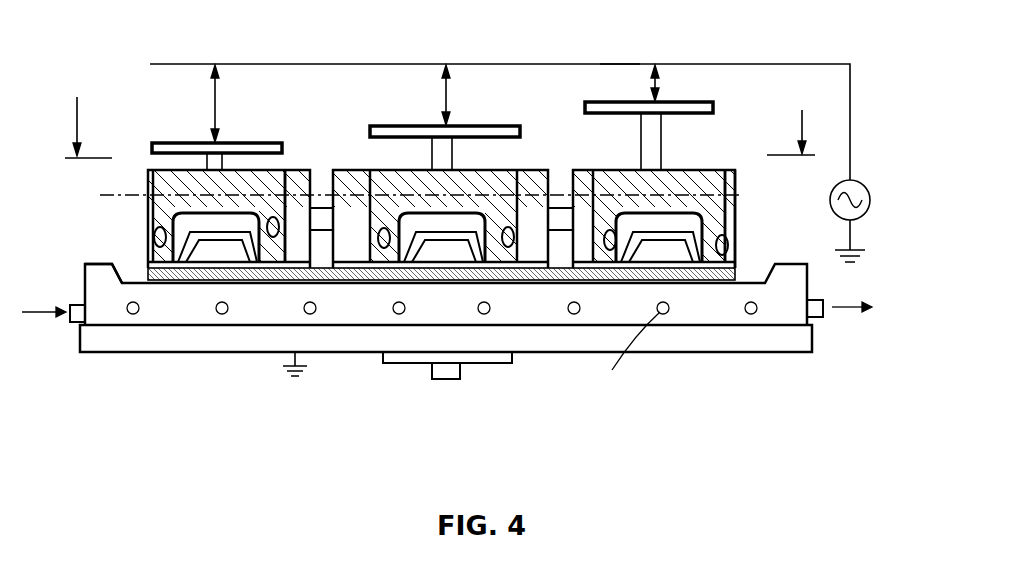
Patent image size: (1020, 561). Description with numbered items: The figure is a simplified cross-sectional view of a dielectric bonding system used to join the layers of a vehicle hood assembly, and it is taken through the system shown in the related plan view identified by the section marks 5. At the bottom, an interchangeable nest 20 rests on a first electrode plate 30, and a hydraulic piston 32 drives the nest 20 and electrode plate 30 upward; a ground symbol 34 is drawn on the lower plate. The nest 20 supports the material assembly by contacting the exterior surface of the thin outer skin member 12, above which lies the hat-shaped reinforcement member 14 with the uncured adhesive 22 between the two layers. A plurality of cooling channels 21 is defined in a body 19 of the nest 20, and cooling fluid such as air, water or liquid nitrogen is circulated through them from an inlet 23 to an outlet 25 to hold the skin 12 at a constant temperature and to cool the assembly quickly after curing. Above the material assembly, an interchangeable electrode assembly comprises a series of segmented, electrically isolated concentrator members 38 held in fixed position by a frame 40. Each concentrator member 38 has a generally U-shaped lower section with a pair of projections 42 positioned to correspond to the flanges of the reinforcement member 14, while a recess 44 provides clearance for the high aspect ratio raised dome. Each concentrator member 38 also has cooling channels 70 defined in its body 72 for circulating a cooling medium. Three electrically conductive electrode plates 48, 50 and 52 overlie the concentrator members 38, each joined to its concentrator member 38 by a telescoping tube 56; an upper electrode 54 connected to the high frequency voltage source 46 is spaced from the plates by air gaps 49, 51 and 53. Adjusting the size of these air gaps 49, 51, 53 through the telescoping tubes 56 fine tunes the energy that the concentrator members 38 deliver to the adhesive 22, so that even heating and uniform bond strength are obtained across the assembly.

The section line of FIG. 5 is at (440, 111).
The outer skin member 12 is at (747, 313).
The reinforcement member 14 is at (740, 228).
The body 19 is at (505, 332).
The interchangeable nest 20 is at (82, 298).
The cooling channel 21 is at (578, 312).
The adhesive 22 is at (738, 278).
The inlet 23 is at (72, 323).
The outlet 25 is at (823, 319).
The first electrode plate 30 is at (100, 340).
The hydraulic piston 32 is at (461, 368).
The ground 34 is at (287, 368).
The concentrator member 38 is at (158, 223).
The frame 40 is at (733, 170).
The projection 42 is at (181, 284).
The recess 44 is at (284, 174).
The high frequency voltage source 46 is at (856, 182).
The electrode plate 48 is at (172, 142).
The air gap 49 is at (218, 100).
The electrode plate 50 is at (398, 122).
The air gap 51 is at (449, 93).
The electrode plate 52 is at (614, 101).
The air gap 53 is at (658, 88).
The upper electrode 54 is at (621, 64).
The telescoping tube 56 is at (222, 163).
The cooling channel 70 is at (153, 238).
The body 72 is at (185, 183).